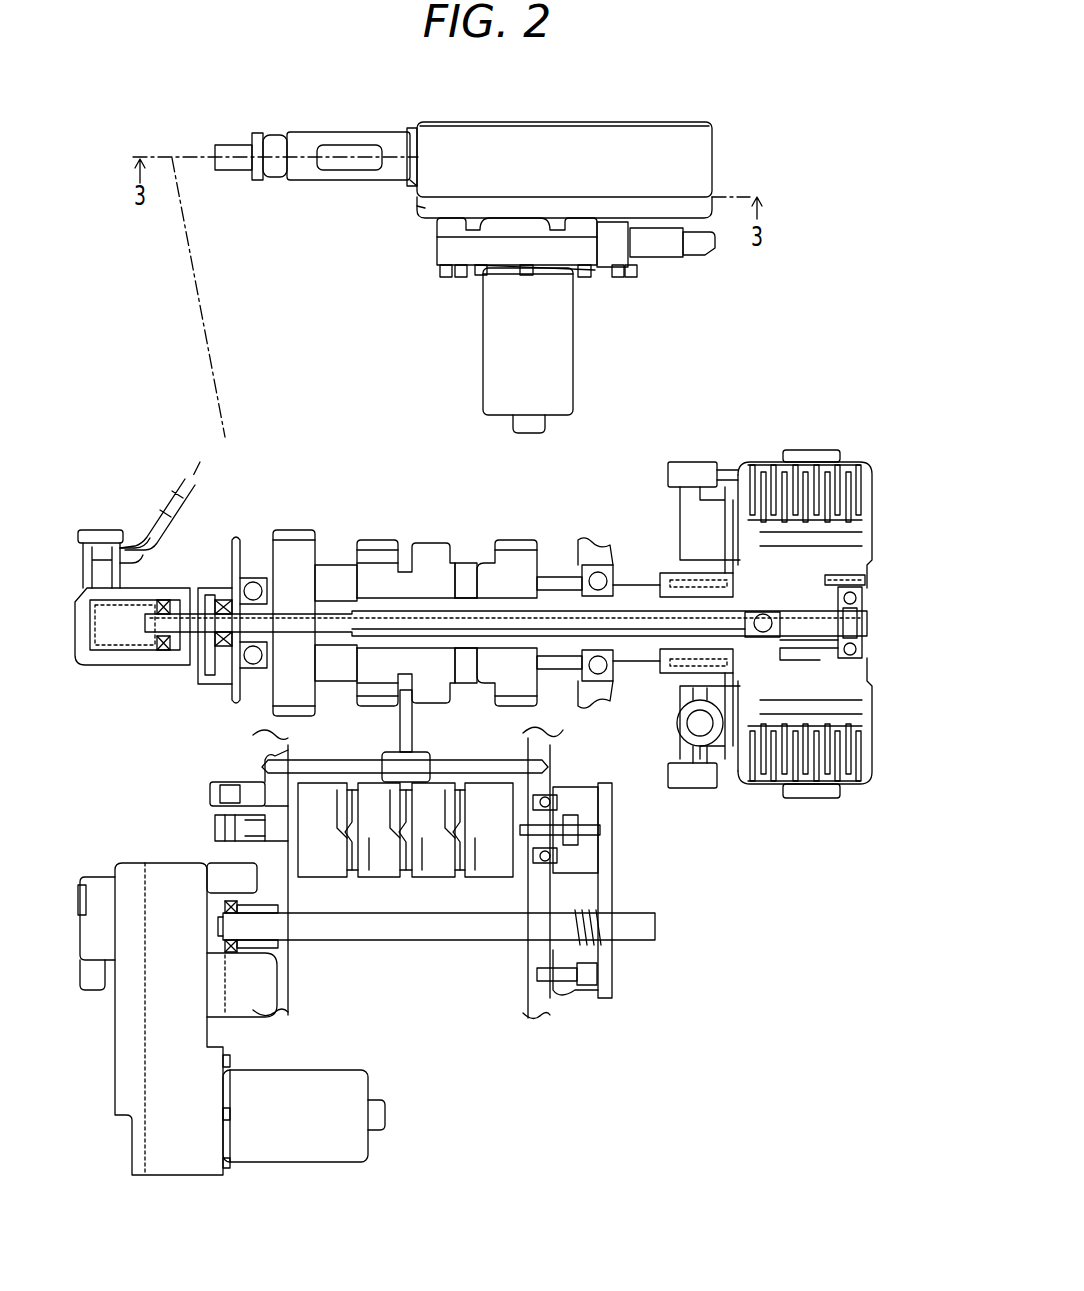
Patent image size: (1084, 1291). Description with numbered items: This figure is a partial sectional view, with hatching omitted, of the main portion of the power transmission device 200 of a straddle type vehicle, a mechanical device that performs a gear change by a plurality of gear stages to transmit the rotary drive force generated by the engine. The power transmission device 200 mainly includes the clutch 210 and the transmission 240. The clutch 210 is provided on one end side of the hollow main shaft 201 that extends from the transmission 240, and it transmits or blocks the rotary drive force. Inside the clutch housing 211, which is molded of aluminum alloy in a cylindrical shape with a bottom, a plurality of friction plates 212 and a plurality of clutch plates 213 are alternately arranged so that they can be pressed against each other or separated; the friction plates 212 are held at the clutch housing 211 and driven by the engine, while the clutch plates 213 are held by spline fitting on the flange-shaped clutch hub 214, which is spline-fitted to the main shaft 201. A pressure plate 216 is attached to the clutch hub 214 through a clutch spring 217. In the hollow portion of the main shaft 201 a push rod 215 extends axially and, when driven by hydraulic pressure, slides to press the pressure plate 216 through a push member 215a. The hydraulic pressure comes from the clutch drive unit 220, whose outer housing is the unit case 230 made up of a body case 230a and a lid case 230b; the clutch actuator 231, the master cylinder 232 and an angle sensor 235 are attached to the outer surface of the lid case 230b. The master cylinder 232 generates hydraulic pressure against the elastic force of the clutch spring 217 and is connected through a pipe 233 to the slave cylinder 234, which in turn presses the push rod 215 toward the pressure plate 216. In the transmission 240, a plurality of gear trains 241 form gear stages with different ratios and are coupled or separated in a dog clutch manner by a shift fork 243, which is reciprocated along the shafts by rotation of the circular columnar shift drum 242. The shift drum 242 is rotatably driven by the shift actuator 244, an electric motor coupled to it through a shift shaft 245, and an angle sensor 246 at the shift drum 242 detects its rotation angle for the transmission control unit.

The power transmission device 200 is at (858, 139).
The main shaft 201 is at (631, 563).
The clutch 210 is at (666, 453).
The clutch housing 211 is at (724, 462).
The friction plates 212 is at (835, 450).
The clutch plates 213 is at (800, 475).
The clutch hub 214 is at (730, 790).
The push rod 215 is at (198, 640).
The push member 215a is at (830, 643).
The pressure plate 216 is at (867, 612).
The clutch spring 217 is at (865, 580).
The clutch drive unit 220 is at (655, 126).
The unit case 230 is at (322, 208).
The body case 230a is at (418, 186).
The lid case 230b is at (420, 208).
The clutch actuator 231 is at (483, 338).
The master cylinder 232 is at (322, 130).
The pipe 233 is at (228, 143).
The slave cylinder 234 is at (97, 667).
The angle sensor 235 is at (663, 258).
The transmission 240 is at (286, 520).
The gear trains 241 is at (380, 540).
The shift drum 242 is at (375, 878).
The shift fork 243 is at (398, 730).
The shift actuator 244 is at (295, 1163).
The shift shaft 245 is at (418, 942).
The angle sensor 246 is at (85, 872).